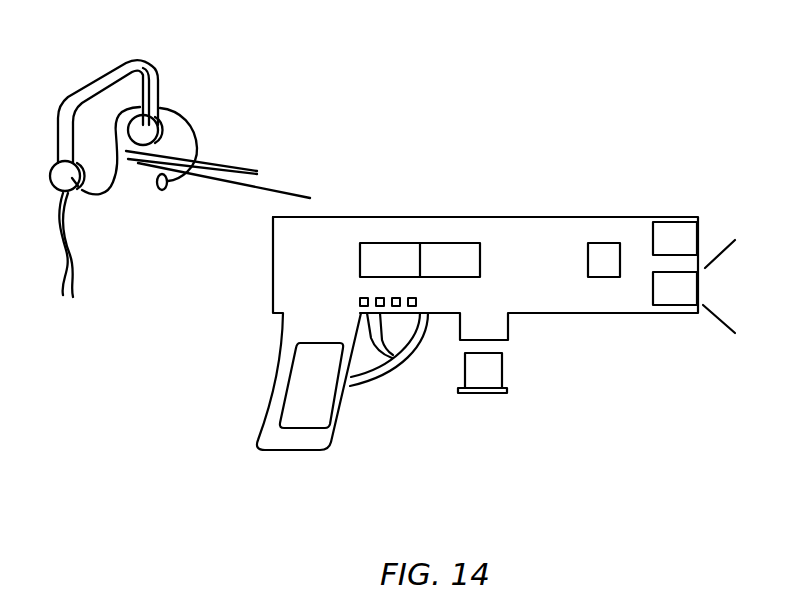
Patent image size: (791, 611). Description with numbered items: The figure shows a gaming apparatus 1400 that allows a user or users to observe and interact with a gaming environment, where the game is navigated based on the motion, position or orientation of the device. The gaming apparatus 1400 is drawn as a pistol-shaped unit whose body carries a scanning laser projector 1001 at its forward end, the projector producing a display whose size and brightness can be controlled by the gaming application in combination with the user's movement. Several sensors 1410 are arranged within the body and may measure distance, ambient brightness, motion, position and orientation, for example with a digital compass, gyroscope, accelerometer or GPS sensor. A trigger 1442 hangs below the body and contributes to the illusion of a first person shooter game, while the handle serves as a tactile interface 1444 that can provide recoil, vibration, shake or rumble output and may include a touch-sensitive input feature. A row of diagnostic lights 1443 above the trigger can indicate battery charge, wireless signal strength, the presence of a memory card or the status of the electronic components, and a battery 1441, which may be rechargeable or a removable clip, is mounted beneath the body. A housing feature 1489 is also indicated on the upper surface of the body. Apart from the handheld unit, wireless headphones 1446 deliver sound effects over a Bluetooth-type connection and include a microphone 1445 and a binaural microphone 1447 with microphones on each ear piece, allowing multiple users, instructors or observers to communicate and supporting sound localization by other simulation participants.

The gaming apparatus 1400 is at (484, 102).
The sensors 1410 is at (388, 253).
The housing 1489 is at (503, 212).
The scanning laser projector 1001 is at (670, 297).
The diagnostic lights 1443 is at (357, 302).
The tactile interface 1444 is at (292, 368).
The trigger 1442 is at (408, 368).
The battery 1441 is at (492, 393).
The wireless headphones 1446 is at (118, 73).
The binaural microphone 1447 is at (144, 128).
The microphone 1445 is at (163, 194).